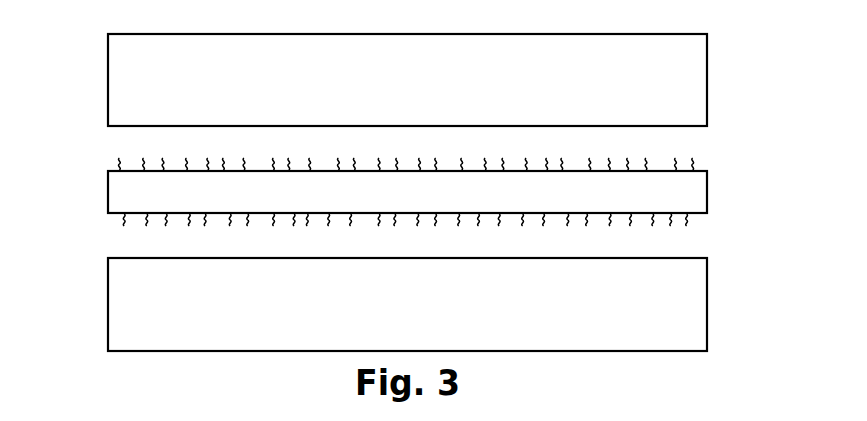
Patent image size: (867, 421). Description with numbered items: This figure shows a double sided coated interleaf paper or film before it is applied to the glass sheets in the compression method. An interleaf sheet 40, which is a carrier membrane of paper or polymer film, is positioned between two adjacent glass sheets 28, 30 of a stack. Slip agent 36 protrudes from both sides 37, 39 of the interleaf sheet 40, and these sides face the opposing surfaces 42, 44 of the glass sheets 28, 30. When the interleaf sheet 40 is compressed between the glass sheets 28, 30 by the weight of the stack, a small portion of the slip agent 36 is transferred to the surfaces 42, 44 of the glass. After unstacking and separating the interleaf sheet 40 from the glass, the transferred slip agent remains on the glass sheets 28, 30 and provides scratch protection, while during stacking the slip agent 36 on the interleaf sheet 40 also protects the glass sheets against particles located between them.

The glass sheet 28 is at (689, 67).
The glass sheet 30 is at (686, 300).
The slip agent 36 is at (693, 163).
The side of interleaf sheet 37 is at (157, 171).
The side of interleaf sheet 39 is at (168, 215).
The interleaf sheet 40 is at (688, 193).
The surface of glass sheet 42 is at (155, 126).
The surface of glass sheet 44 is at (220, 258).